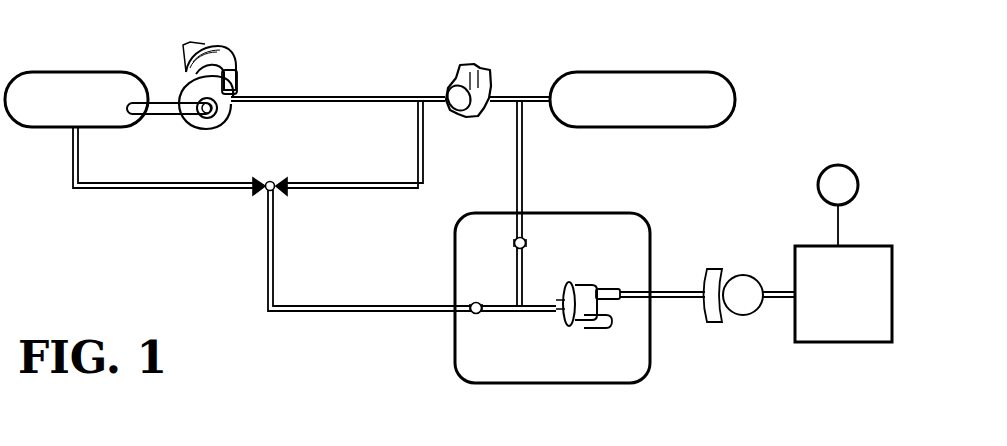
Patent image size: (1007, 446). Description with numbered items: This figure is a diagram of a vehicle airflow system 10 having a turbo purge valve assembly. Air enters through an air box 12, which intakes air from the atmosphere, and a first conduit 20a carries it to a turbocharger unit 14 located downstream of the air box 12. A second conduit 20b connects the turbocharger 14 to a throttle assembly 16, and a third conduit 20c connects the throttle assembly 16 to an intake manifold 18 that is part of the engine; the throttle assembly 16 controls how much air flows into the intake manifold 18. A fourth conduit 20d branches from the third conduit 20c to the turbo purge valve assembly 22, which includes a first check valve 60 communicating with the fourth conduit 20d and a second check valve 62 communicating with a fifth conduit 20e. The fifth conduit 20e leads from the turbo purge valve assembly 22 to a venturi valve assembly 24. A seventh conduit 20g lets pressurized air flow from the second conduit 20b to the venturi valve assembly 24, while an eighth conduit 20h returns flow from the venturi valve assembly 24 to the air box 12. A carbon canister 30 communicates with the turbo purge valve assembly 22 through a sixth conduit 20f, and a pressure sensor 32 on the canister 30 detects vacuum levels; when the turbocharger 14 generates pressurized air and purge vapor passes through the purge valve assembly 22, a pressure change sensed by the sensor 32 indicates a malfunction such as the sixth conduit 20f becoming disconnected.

The airflow system 10 is at (228, 243).
The air box 12 is at (40, 72).
The turbocharger unit 14 is at (210, 74).
The throttle assembly 16 is at (447, 75).
The intake manifold 18 is at (677, 72).
The first conduit 20a is at (162, 100).
The second conduit 20b is at (348, 96).
The third conduit 20c is at (512, 96).
The fourth conduit 20d is at (523, 128).
The fifth conduit 20e is at (362, 305).
The sixth conduit 20f is at (668, 283).
The seventh conduit 20g is at (423, 145).
The eighth conduit 20h is at (140, 190).
The turbo purge valve assembly 22 is at (630, 332).
The venturi valve assembly 24 is at (275, 193).
The carbon canister 30 is at (838, 342).
The pressure sensor 32 is at (843, 165).
The first check valve 60 is at (526, 249).
The second check valve 62 is at (478, 301).